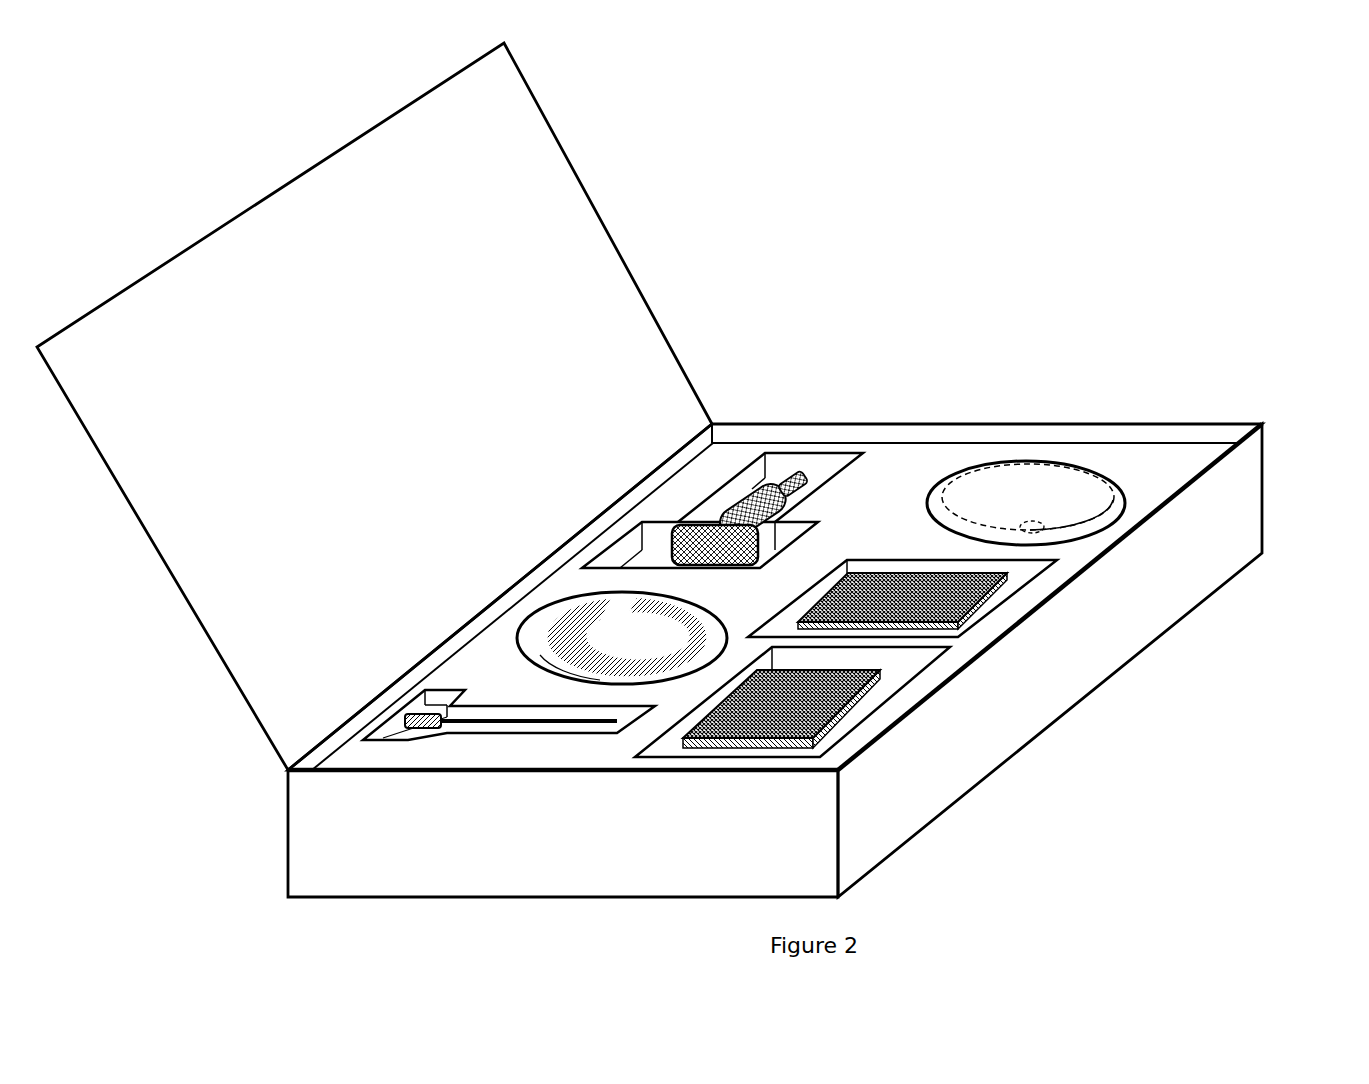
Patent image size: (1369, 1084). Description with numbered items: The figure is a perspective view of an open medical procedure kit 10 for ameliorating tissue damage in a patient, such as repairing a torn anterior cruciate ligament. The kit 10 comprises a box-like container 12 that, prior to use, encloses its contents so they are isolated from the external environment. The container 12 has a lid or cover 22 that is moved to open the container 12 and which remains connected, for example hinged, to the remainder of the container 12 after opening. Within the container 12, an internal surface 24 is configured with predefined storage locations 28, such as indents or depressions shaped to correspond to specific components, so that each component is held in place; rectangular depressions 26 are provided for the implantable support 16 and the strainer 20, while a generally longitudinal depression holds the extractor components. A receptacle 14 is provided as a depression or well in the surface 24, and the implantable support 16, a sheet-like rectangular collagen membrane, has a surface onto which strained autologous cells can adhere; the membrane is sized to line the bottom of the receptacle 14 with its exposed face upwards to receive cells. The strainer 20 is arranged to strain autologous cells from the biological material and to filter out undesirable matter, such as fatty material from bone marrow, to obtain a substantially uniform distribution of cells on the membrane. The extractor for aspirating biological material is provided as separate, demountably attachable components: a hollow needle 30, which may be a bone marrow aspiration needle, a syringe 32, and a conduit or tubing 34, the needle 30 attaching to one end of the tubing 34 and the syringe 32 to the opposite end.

The medical procedure kit 10 is at (1296, 147).
The container 12 is at (820, 422).
The receptacle 14 is at (1077, 462).
The implantable support 16 is at (837, 718).
The strainer 20 is at (995, 589).
The lid or cover 22 is at (622, 257).
The surface 24 is at (1180, 455).
The pad recesses 26 is at (893, 695).
The compartments 28 is at (617, 547).
The hollow needle 30 is at (483, 722).
The syringe 32 is at (765, 477).
The conduit or tubing 34 is at (557, 630).